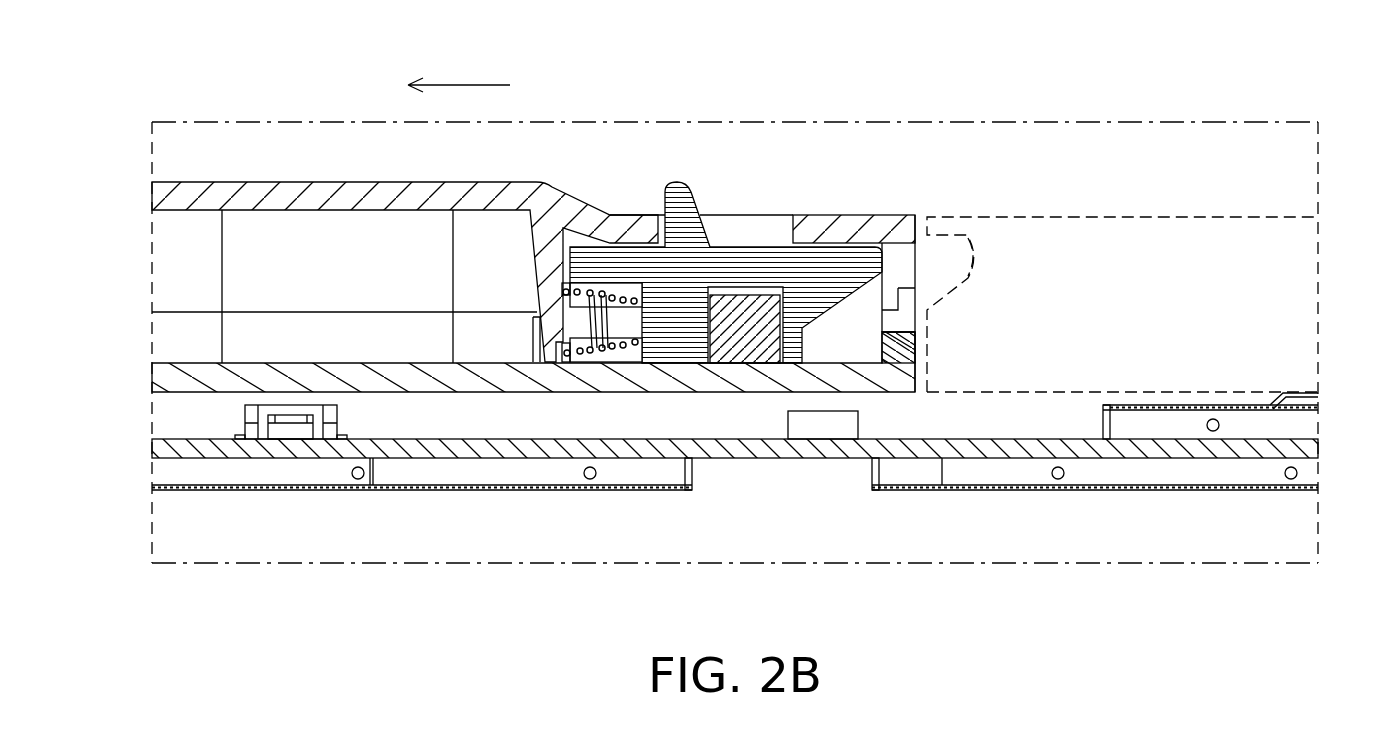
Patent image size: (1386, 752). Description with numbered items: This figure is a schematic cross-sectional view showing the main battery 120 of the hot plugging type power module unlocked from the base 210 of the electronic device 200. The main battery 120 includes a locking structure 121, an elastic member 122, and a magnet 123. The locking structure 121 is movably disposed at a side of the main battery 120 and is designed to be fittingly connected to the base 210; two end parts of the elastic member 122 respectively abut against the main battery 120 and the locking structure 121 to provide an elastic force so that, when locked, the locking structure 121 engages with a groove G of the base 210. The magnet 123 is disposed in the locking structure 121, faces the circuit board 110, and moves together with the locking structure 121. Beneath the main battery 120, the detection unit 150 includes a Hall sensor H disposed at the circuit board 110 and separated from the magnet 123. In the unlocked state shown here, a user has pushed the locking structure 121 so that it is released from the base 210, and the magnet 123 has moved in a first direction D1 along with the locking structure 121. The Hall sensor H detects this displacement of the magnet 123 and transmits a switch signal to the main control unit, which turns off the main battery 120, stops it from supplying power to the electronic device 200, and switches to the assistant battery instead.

The circuit board 110 is at (533, 450).
The main battery 120 is at (320, 192).
The locking structure 121 is at (722, 262).
The elastic member 122 is at (607, 303).
The magnet 123 is at (765, 320).
The detection unit 150 is at (823, 423).
The Hall sensor H is at (838, 515).
The electronic device 200 is at (1122, 228).
The base 210 is at (1147, 242).
The groove G is at (983, 261).
The first direction D1 is at (459, 68).